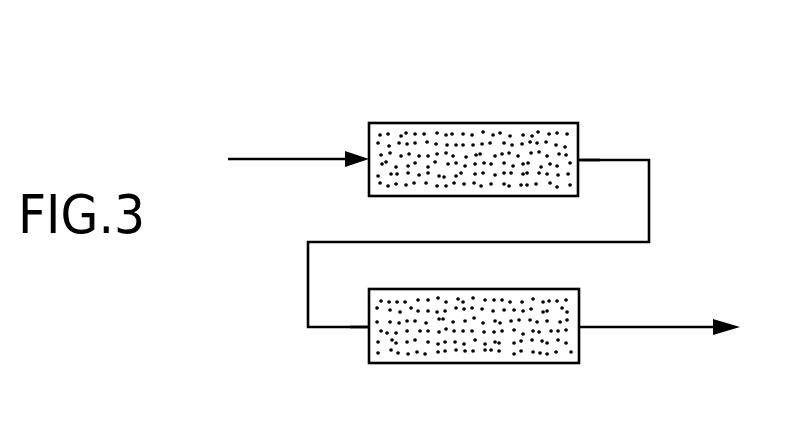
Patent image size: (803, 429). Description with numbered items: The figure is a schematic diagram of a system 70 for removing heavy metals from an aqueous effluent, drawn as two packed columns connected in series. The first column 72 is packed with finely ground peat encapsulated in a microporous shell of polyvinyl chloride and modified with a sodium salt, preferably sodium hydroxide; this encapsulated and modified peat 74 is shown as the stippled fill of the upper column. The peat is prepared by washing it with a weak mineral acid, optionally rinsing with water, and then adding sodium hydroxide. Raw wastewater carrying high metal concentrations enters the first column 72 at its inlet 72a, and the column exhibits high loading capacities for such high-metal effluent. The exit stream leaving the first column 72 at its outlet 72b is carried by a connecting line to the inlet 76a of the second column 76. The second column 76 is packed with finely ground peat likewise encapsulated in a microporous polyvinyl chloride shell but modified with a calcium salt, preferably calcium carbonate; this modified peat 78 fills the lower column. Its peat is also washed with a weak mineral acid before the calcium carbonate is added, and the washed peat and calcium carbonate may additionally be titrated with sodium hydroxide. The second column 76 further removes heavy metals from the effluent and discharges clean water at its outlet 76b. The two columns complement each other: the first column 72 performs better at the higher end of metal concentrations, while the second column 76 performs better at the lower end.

The system for removing heavy metals from an aqueous effluent 70 is at (240, 292).
The first column 72 is at (388, 123).
The inlet 72a is at (369, 162).
The outlet 72b is at (580, 156).
The encapsulated and modified peat 74 is at (542, 147).
The second column 76 is at (478, 364).
The inlet 76a is at (369, 330).
The outlet 76b is at (582, 330).
The modified peat 78 is at (556, 302).